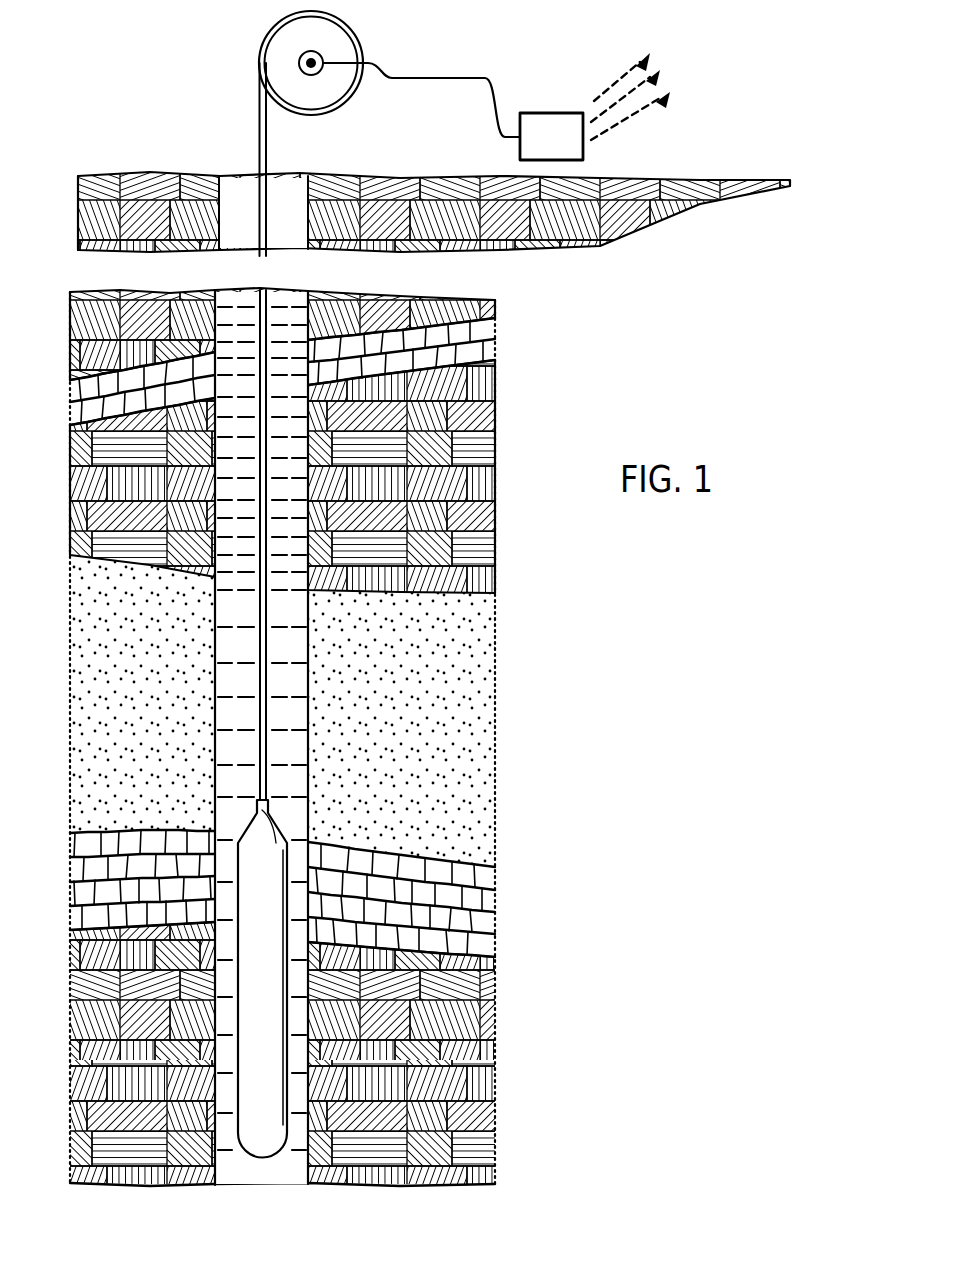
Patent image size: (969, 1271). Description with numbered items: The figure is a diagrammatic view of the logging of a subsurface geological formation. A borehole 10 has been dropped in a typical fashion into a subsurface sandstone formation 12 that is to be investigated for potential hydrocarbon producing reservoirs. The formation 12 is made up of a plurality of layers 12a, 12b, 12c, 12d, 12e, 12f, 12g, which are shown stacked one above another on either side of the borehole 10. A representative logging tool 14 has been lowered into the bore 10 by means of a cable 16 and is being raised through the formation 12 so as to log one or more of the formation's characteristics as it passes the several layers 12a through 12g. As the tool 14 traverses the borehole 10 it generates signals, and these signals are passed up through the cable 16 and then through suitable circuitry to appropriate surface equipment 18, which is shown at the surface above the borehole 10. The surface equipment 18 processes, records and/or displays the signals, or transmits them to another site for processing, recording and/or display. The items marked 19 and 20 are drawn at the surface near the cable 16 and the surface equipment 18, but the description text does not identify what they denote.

The borehole 10 is at (301, 234).
The subsurface sandstone formation 12 is at (430, 679).
The layer 12a is at (483, 295).
The layer 12b is at (487, 348).
The layer 12c is at (477, 443).
The layer 12d is at (467, 688).
The layer 12e is at (473, 902).
The layer 12f is at (450, 1015).
The layer 12g is at (450, 1117).
The logging tool 14 is at (257, 997).
The cable 16 is at (259, 152).
The surface equipment 18 is at (287, 44).
The signal conductor 19 is at (408, 78).
The surface recording and transmitting unit 20 is at (545, 122).